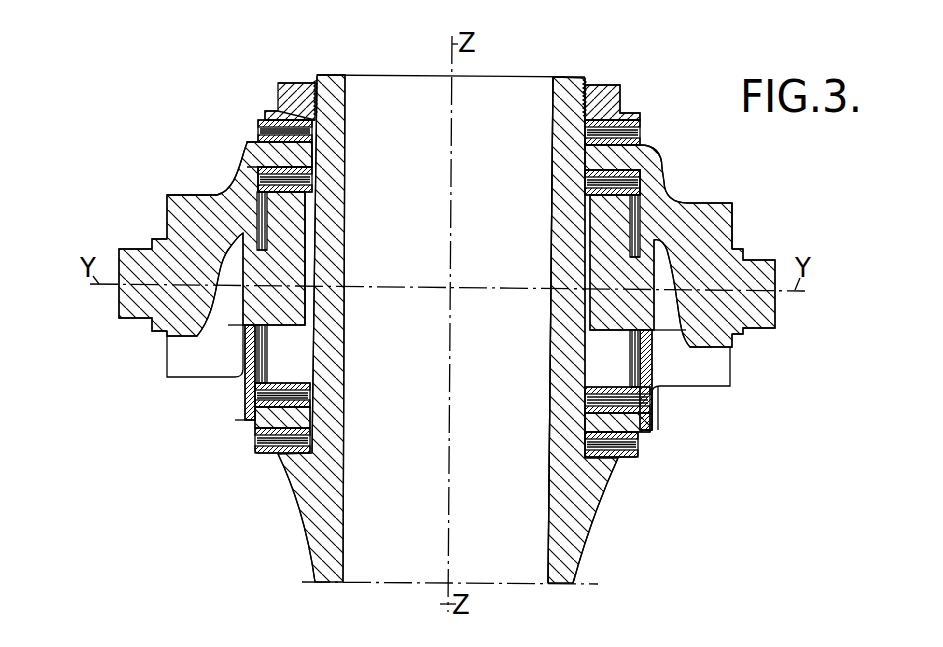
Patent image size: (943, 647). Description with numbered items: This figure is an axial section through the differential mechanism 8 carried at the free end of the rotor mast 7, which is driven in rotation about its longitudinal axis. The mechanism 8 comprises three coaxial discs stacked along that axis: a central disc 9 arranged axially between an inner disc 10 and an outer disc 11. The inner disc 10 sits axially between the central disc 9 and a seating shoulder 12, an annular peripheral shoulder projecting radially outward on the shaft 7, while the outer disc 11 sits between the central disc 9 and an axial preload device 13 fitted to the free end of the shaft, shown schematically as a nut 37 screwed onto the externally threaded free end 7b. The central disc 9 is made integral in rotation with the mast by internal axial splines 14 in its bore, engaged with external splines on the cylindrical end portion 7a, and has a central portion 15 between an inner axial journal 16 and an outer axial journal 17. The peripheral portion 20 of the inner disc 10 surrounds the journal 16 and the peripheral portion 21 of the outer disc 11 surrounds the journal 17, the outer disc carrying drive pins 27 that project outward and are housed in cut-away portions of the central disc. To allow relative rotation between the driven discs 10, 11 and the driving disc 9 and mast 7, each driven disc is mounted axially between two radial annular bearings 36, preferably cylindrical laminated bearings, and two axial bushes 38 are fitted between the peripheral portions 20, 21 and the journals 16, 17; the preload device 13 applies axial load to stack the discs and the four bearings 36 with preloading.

The mast 7 is at (572, 505).
The cylindrical end portion 7a is at (567, 273).
The externally threaded free end 7b is at (566, 92).
The differential mechanism 8 is at (153, 188).
The central disc 9 is at (265, 311).
The inner disc 10 is at (243, 418).
The outer disc 11 is at (233, 141).
The seating shoulder 12 is at (316, 497).
The axial preload device 13 is at (274, 81).
The internal axial splines 14 is at (307, 257).
The central portion 15 is at (640, 282).
The inner axial journal 16 is at (656, 388).
The outer axial journal 17 is at (612, 238).
The peripheral portion 20 is at (250, 358).
The peripheral portion 21 is at (238, 223).
The drive pins 27 is at (148, 305).
The radial annular bearings 36 is at (648, 176).
The nut 37 is at (601, 105).
The axial bushes 38 is at (643, 207).